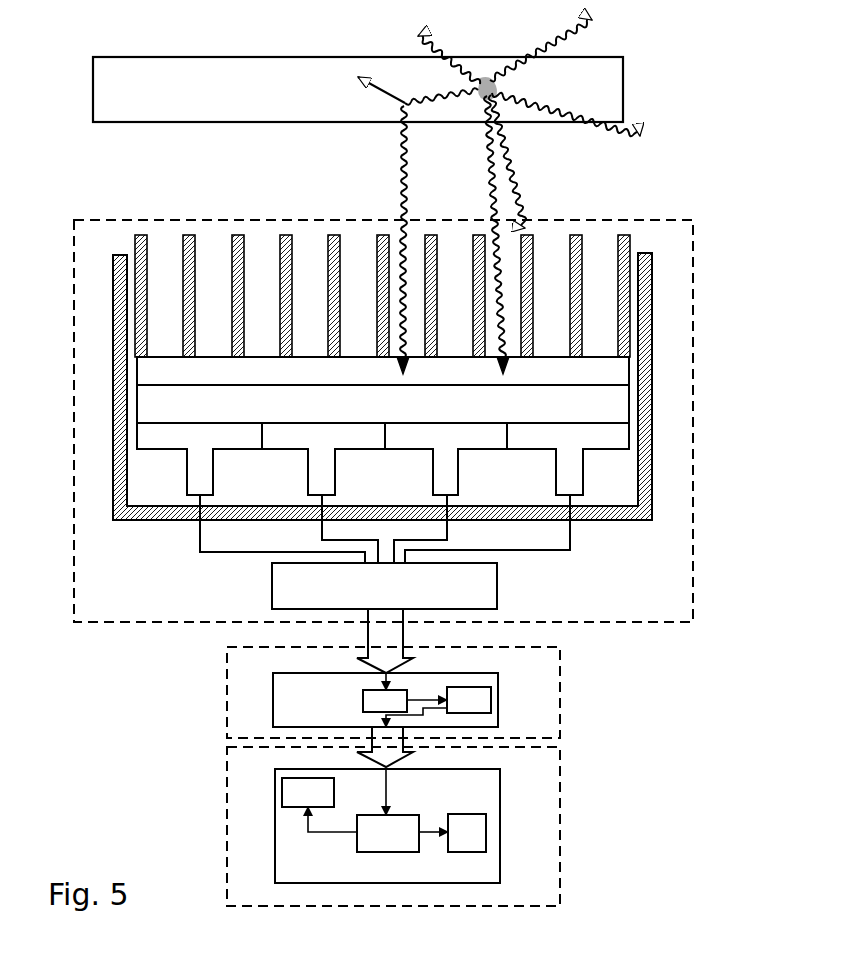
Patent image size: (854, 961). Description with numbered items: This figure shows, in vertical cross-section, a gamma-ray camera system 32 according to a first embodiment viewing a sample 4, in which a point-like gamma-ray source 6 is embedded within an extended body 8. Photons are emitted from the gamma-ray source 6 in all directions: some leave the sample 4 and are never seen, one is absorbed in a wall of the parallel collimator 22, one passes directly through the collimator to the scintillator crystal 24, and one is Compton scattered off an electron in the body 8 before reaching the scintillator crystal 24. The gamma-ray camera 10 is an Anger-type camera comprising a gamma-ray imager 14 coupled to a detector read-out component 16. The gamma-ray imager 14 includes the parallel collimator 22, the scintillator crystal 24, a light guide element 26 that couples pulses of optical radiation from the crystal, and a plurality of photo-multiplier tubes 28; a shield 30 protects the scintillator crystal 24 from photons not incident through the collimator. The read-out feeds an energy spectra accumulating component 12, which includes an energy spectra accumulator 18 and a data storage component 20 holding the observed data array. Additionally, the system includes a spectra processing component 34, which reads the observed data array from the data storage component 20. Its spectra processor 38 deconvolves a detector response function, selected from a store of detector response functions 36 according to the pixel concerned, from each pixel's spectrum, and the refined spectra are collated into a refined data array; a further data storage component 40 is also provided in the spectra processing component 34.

The sample 4 is at (678, 142).
The gamma-ray source 6 is at (494, 84).
The extended body 8 is at (604, 57).
The gamma-ray camera 10 is at (356, 398).
The energy spectra accumulating component 12 is at (393, 692).
The gamma-ray imager 14 is at (338, 375).
The detector read-out component 16 is at (385, 552).
The energy spectra accumulator 18 is at (363, 703).
The data storage component 20 is at (491, 700).
The parallel collimator 22 is at (238, 236).
The scintillator crystal 24 is at (150, 367).
The light guide element 26 is at (150, 405).
The photo-multiplier tubes 28 is at (324, 463).
The shield 30 is at (607, 518).
The gamma-ray camera system 32 is at (722, 215).
The spectra processing component 34 is at (371, 849).
The store of detector response functions 36 is at (290, 792).
The spectra processor 38 is at (392, 847).
The data storage component 40 is at (467, 845).